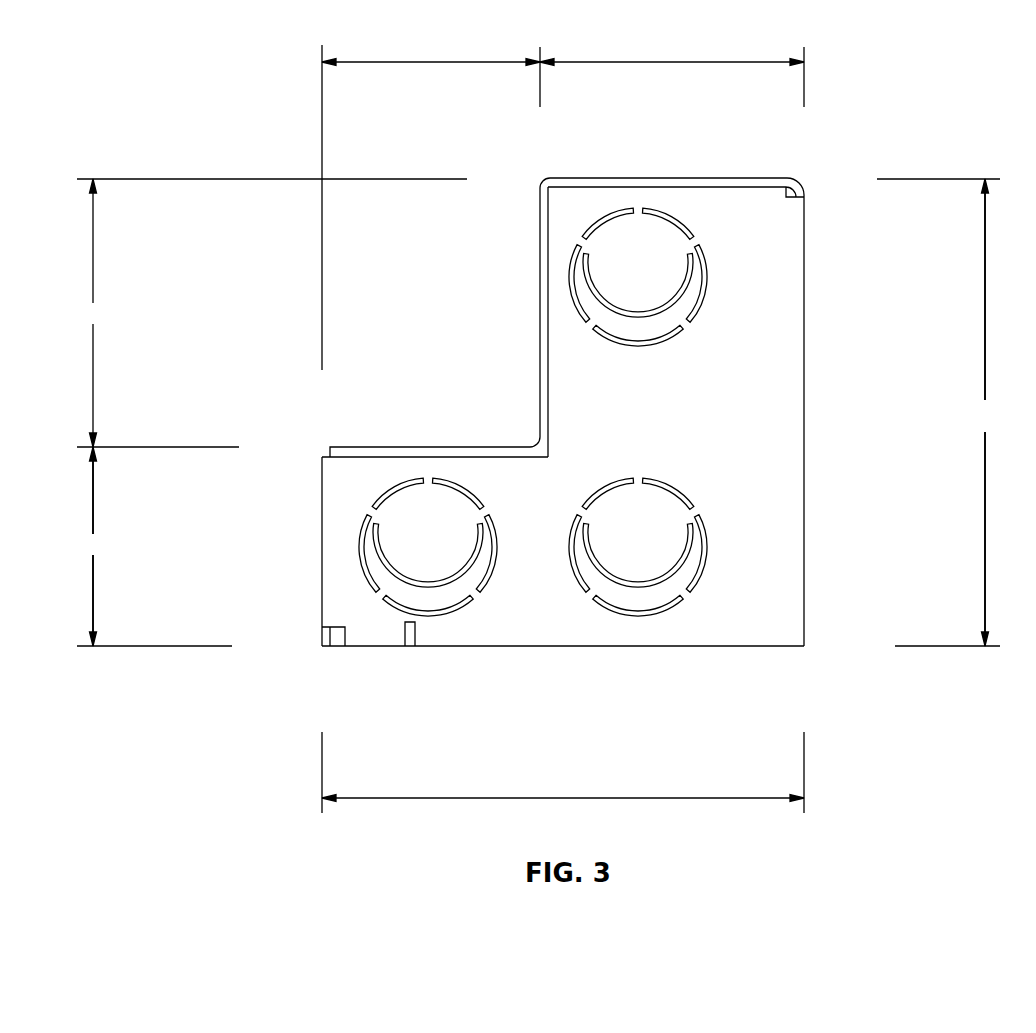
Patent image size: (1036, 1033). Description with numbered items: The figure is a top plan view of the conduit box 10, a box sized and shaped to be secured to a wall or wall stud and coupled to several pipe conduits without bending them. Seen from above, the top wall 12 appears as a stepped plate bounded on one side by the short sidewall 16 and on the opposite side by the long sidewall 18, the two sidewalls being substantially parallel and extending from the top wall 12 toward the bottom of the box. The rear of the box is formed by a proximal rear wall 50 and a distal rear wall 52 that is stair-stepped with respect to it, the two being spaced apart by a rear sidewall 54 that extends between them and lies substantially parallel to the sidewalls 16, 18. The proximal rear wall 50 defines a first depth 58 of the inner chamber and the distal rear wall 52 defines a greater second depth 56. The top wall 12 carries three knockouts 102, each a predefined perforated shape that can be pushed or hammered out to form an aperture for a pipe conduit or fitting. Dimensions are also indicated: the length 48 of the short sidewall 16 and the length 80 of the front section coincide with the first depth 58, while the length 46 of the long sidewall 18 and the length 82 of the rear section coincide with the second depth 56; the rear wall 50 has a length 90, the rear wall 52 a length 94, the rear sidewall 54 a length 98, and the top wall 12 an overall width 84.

The conduit box 10 is at (838, 139).
The top wall 12 is at (757, 427).
The short sidewall 16 is at (320, 559).
The long sidewall 18 is at (805, 360).
The proximal rear wall 50 is at (432, 447).
The distal rear wall 52 is at (688, 177).
The rear sidewall 54 is at (540, 327).
The knockout 102 is at (707, 288).
The length of the rear wall 90 is at (420, 51).
The length of the rear wall 94 is at (662, 51).
The length of the rear sidewall 98 is at (83, 321).
The length of the sidewall 48 is at (74, 552).
The first depth 58 is at (103, 552).
The length of the front sections 80 is at (131, 552).
The length of the sidewall 46 is at (966, 425).
The second depth 56 is at (995, 425).
The length of the rear sections 82 is at (1023, 425).
The width of the top and bottom walls 84 is at (553, 788).